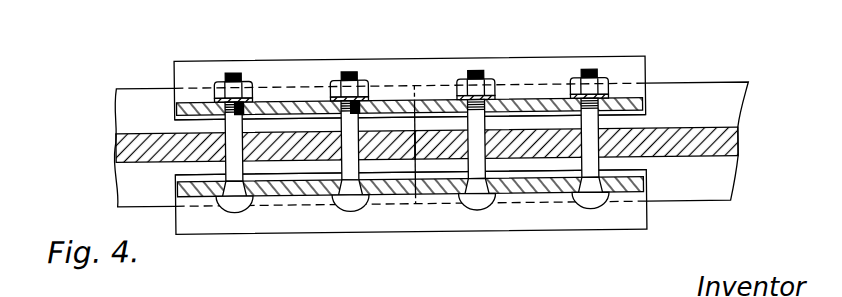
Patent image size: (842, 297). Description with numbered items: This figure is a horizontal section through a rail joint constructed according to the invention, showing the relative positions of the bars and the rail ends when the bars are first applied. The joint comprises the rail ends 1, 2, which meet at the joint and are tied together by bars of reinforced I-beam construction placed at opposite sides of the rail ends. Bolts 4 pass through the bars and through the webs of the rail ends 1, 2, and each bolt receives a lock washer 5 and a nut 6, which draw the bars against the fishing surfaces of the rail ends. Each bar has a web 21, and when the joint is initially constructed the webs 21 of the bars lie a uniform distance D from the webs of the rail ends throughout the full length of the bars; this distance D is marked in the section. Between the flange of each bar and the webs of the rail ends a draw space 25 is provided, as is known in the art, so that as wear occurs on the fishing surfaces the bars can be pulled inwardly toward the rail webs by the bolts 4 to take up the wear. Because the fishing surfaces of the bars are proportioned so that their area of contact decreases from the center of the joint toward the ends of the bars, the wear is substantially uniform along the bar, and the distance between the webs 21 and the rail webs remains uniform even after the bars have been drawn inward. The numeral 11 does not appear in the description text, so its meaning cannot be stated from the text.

The rail end 1 is at (118, 146).
The rail end 2 is at (733, 141).
The distance between bar webs and rail webs D is at (193, 127).
The web of the bar 21 is at (285, 105).
The joint 11 is at (396, 100).
The draw space 25 is at (636, 126).
The lock washer 5 is at (255, 98).
The nut 6 is at (216, 78).
The bolt 4 is at (238, 208).